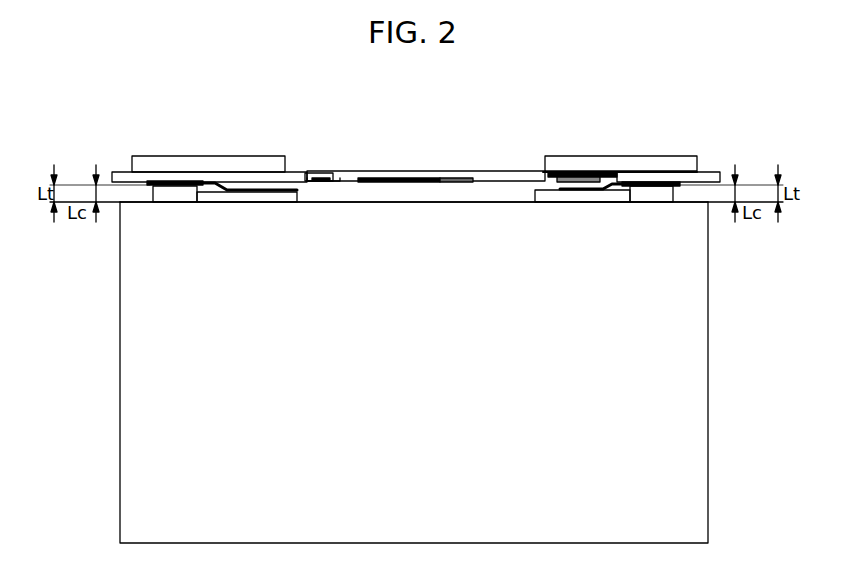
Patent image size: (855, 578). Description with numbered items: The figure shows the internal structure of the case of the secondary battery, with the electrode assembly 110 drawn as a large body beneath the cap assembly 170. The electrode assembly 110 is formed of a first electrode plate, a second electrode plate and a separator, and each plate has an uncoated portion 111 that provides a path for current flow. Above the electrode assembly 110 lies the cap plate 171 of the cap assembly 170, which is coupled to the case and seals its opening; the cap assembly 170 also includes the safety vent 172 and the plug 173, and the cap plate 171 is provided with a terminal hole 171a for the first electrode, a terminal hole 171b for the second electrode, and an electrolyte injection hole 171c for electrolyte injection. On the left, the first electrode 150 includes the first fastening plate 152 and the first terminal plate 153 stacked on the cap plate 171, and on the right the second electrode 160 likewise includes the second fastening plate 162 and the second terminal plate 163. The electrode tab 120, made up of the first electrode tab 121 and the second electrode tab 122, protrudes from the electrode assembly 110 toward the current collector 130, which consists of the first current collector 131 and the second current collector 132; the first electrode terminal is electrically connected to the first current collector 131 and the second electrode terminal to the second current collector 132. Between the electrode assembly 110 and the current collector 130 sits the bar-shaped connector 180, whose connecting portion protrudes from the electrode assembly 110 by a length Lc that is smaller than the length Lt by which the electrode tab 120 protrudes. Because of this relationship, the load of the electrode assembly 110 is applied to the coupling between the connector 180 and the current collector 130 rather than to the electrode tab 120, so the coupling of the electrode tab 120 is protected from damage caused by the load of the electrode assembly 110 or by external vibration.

The electrode assembly 110 is at (690, 331).
The uncoated portion 111 is at (680, 205).
The electrode tab 120 is at (413, 257).
The first electrode tab 121 is at (285, 196).
The second electrode tab 122 is at (565, 235).
The current collector 130 is at (412, 287).
The first current collector 131 is at (208, 194).
The second current collector 132 is at (567, 266).
The first electrode 150 is at (206, 132).
The first fastening plate 152 is at (131, 171).
The first terminal plate 153 is at (252, 158).
The second electrode 160 is at (634, 132).
The second fastening plate 162 is at (699, 171).
The second terminal plate 163 is at (576, 158).
The cap assembly 170 is at (416, 143).
The cap plate 171 is at (490, 172).
The terminal hole 171a is at (160, 181).
The terminal hole 171b is at (666, 181).
The electrolyte injection hole 171c is at (326, 171).
The safety vent 172 is at (437, 177).
The plug 173 is at (322, 174).
The connector 180 is at (177, 195).